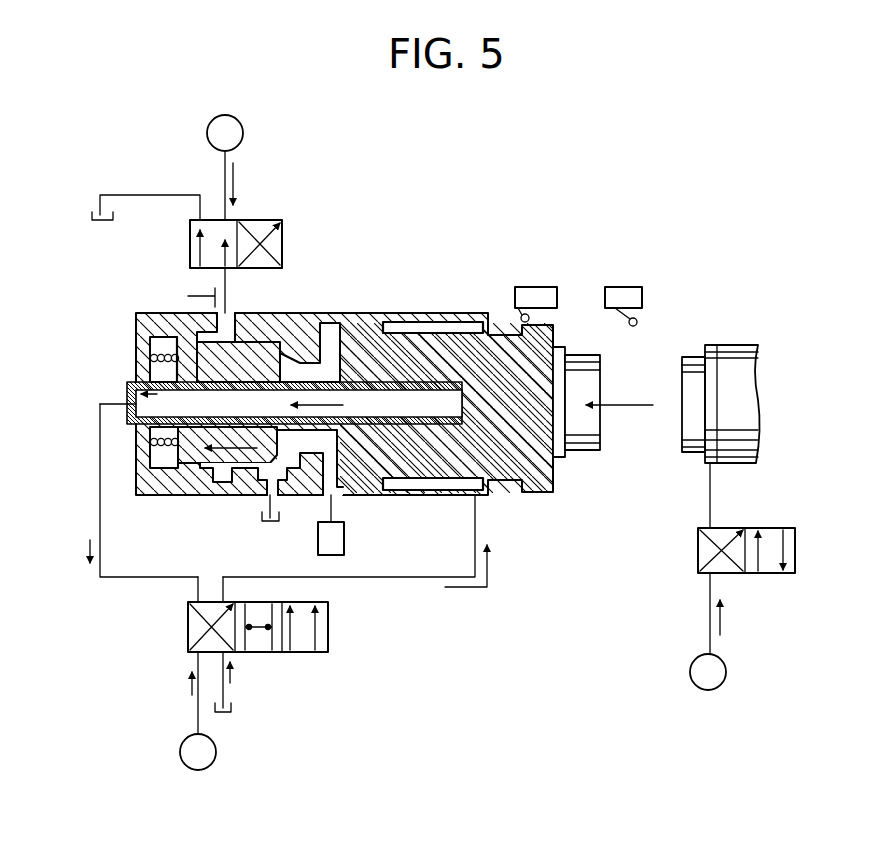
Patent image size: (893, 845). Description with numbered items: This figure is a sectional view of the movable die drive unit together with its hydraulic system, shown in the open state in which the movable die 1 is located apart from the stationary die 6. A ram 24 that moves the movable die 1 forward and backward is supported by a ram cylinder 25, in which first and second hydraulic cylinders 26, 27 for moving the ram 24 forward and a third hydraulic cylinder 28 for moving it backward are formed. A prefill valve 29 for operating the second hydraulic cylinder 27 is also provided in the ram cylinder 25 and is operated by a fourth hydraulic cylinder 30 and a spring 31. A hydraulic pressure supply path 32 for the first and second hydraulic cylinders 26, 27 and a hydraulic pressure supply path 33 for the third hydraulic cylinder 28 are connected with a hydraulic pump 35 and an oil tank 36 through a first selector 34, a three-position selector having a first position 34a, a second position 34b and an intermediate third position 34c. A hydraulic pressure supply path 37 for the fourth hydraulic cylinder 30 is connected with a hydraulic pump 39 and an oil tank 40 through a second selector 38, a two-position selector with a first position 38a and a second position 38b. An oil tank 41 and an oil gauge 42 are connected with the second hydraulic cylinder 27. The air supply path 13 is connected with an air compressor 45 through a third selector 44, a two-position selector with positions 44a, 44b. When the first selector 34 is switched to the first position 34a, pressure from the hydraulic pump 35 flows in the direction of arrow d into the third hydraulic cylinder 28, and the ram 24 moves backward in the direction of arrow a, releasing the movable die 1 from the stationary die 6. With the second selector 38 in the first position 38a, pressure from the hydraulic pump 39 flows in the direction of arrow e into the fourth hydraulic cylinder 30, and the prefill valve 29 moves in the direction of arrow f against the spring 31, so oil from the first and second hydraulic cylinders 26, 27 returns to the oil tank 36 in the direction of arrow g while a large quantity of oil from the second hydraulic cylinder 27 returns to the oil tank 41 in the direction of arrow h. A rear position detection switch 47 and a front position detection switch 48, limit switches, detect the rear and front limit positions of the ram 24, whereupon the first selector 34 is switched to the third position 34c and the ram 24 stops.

The movable die 1 is at (580, 455).
The stationary die 6 is at (688, 358).
The air supply path 13 is at (712, 492).
The ram 24 is at (464, 352).
The ram cylinder 25 is at (413, 318).
The first hydraulic cylinder 26 is at (452, 405).
The second hydraulic cylinder 27 is at (331, 344).
The third hydraulic cylinder 28 is at (446, 494).
The prefill valve 29 is at (202, 357).
The fourth hydraulic cylinder 30 is at (250, 310).
The spring 31 is at (150, 455).
The hydraulic pressure supply path 32 is at (122, 578).
The hydraulic pressure supply path 33 is at (480, 523).
The first selector 34 is at (256, 666).
The first position 34a is at (190, 628).
The second position 34b is at (325, 643).
The third position 34c is at (262, 654).
The hydraulic pump 35 is at (183, 762).
The oil tank 36 is at (233, 708).
The hydraulic pressure supply path 37 is at (223, 278).
The second selector 38 is at (245, 206).
The first position 38a is at (191, 240).
The second position 38b is at (284, 228).
The hydraulic pump 39 is at (230, 114).
The oil tank 40 is at (92, 198).
The oil tank 41 is at (262, 522).
The oil gauge 42 is at (345, 534).
The third selector 44 is at (711, 591).
The first position 44a is at (700, 547).
The second position 44b is at (773, 575).
The air compressor 45 is at (696, 686).
The rear position detection switch 47 is at (542, 286).
The front position detection switch 48 is at (630, 286).
The arrow a is at (632, 406).
The arrow d is at (488, 590).
The arrow e is at (236, 175).
The arrow f is at (233, 452).
The arrow g is at (323, 402).
The arrow h is at (313, 438).